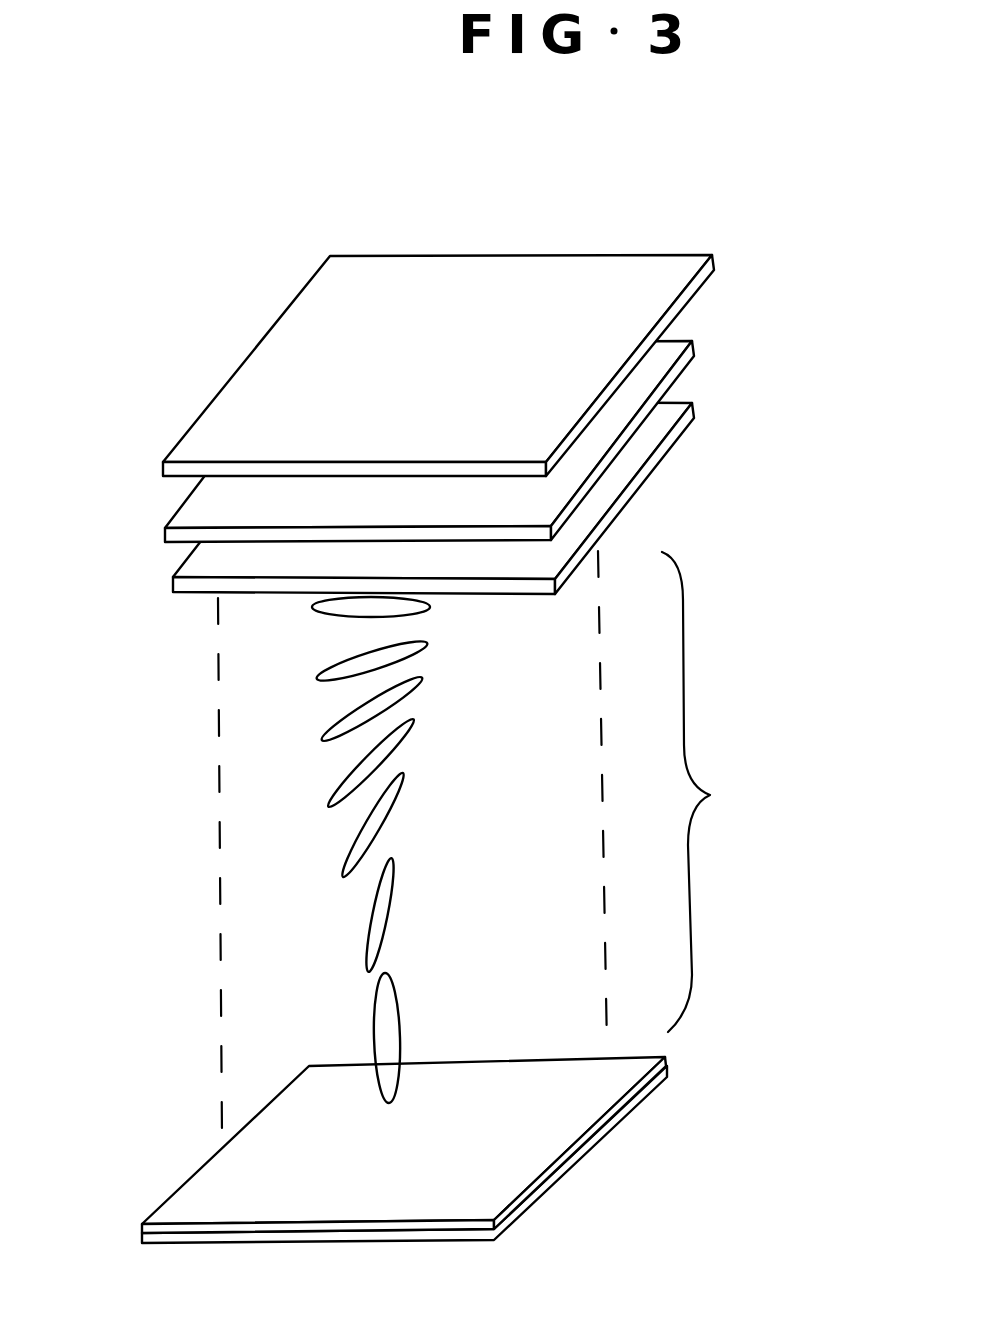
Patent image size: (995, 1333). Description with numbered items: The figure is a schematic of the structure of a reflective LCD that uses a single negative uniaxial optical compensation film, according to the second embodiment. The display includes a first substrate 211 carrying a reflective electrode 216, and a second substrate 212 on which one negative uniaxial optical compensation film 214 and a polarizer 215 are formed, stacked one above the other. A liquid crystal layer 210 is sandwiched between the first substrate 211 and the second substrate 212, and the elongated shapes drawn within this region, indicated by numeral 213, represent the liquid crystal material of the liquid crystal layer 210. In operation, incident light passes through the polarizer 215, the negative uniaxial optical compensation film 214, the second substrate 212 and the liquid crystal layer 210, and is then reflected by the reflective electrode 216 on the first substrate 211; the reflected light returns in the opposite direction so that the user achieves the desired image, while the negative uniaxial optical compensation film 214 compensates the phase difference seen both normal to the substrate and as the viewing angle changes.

The liquid crystal layer 210 is at (495, 843).
The first substrate 211 is at (359, 1150).
The second substrate 212 is at (197, 567).
The liquid crystal molecules 213 is at (358, 847).
The negative uniaxial optical compensation film 214 is at (198, 508).
The polarizer 215 is at (243, 395).
The reflective electrode 216 is at (215, 1187).